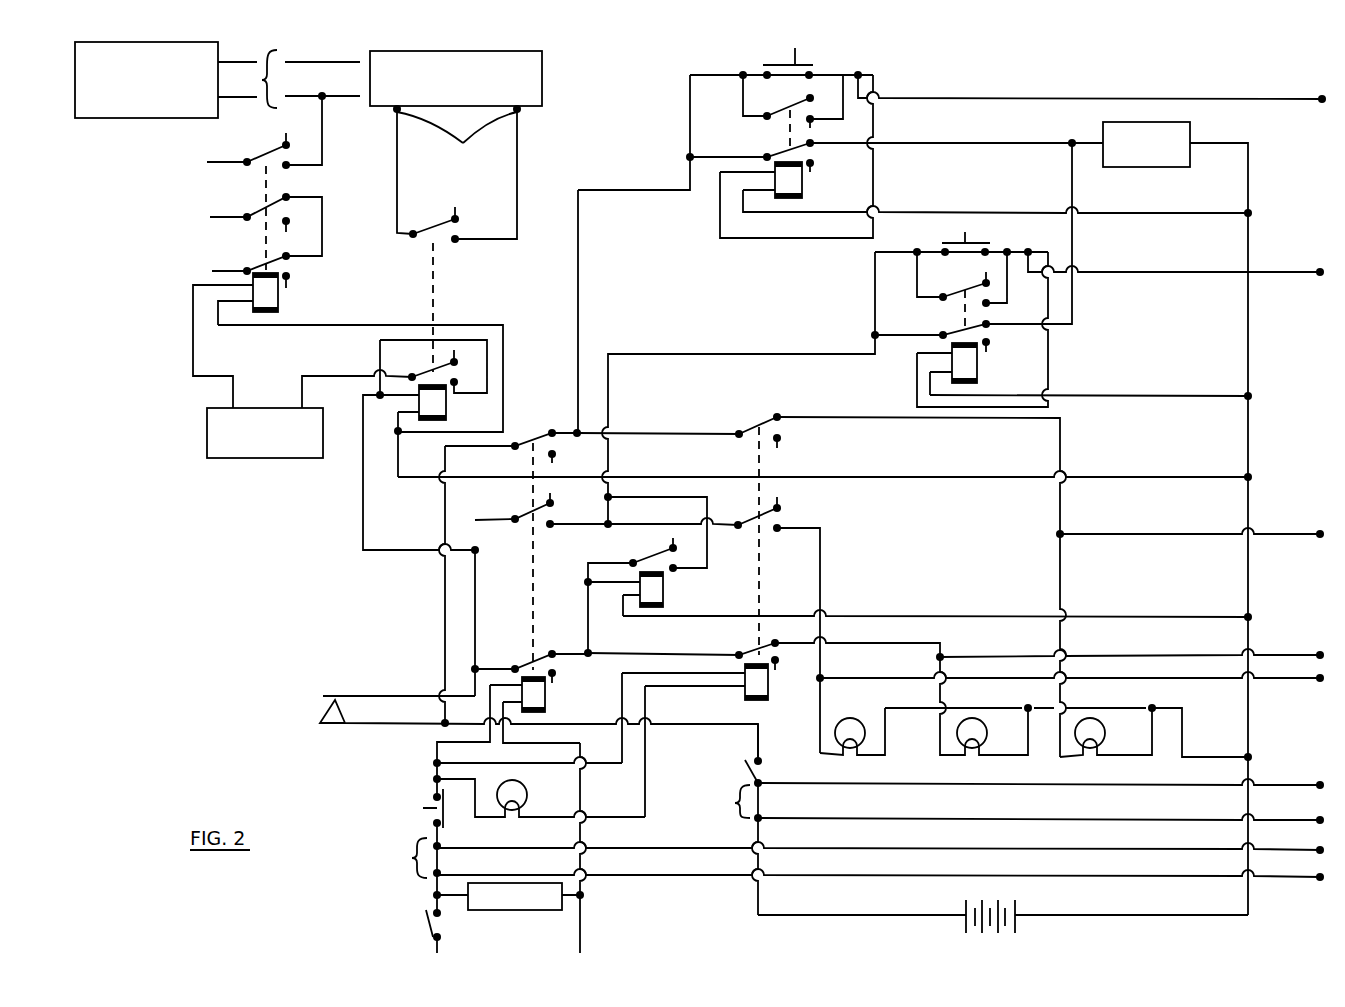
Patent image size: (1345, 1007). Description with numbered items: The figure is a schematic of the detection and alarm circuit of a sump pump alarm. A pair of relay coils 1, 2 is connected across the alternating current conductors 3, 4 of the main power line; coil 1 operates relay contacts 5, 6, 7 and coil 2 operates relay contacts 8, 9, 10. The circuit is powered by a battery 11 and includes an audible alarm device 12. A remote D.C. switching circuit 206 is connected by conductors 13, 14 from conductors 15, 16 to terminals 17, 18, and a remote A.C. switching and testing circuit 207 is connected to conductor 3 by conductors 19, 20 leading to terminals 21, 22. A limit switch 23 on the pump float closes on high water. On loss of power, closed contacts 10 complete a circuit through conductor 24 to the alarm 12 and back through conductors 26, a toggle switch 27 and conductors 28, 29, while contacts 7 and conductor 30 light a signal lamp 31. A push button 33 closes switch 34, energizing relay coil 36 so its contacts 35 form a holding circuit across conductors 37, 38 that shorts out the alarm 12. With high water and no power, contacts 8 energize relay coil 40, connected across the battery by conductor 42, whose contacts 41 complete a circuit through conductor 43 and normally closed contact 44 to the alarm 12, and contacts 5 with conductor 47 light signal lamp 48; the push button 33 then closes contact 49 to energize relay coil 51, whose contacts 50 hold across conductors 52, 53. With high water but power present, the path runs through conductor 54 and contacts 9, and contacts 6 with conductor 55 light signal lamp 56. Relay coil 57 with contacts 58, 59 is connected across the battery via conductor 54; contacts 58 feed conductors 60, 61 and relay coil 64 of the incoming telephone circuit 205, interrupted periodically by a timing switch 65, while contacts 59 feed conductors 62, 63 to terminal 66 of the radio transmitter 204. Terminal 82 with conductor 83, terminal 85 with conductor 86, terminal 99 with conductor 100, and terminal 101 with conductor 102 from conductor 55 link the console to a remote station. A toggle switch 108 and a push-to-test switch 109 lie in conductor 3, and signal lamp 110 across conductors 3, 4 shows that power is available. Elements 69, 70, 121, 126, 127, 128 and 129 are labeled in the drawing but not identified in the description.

The relay coil 1 is at (770, 690).
The relay coil 2 is at (546, 700).
The 110 Volt conductor 3 is at (435, 885).
The 110 Volt conductor 4 is at (583, 922).
The relay contacts 5 is at (752, 650).
The relay contacts 6 is at (752, 518).
The relay contacts 7 is at (762, 425).
The relay contacts 8 is at (525, 660).
The relay contacts 9 is at (527, 513).
The relay contacts 10 is at (542, 430).
The battery 11 is at (1020, 920).
The alarm device 12 is at (1178, 167).
The conductor 13 is at (912, 785).
The conductor 14 is at (1040, 819).
The conductor 15 is at (758, 830).
The conductor 16 is at (760, 748).
The terminal 17 is at (1318, 876).
The terminal 18 is at (1318, 848).
The conductor 19 is at (1088, 849).
The conductor 20 is at (1118, 876).
The terminal 21 is at (1318, 818).
The terminal 22 is at (1318, 783).
The limit switch 23 is at (318, 712).
The conductor 24 is at (945, 143).
The conductors 26 is at (855, 917).
The toggle switch 27 is at (746, 772).
The conductor 28 is at (708, 724).
The conductor 29 is at (445, 605).
The conductor 30 is at (1066, 428).
The signal lamp 31 is at (1106, 742).
The push button 33 is at (805, 64).
The switch 34 is at (785, 150).
The relay contacts 35 is at (790, 112).
The relay coil 36 is at (802, 183).
The conductor 37 is at (723, 73).
The conductor 38 is at (1103, 212).
The relay coil 40 is at (663, 595).
The relay contacts 41 is at (650, 560).
The conductor 42 is at (783, 615).
The conductor 43 is at (815, 352).
The relay contact 44 is at (960, 330).
The conductor 47 is at (858, 645).
The signal lamp 48 is at (982, 740).
The switch contact 49 is at (975, 243).
The relay contacts 50 is at (965, 290).
The relay coil 51 is at (977, 364).
The conductor 52 is at (893, 252).
The conductor 53 is at (1178, 395).
The conductor 54 is at (400, 696).
The conductor 55 is at (822, 545).
The signal lamp 56 is at (850, 718).
The relay coil 57 is at (446, 412).
The relay contacts 58 is at (428, 373).
The relay contacts 59 is at (440, 227).
The conductor 60 is at (193, 308).
The conductor 61 is at (370, 323).
The conductor 62 is at (397, 177).
The conductor 63 is at (517, 160).
The relay coil 64 is at (280, 300).
The timing switch 65 is at (207, 433).
The terminal 66 is at (457, 143).
The terminal 69 is at (1252, 757).
The terminal 70 is at (1318, 530).
The terminal 82 is at (1320, 95).
The conductor 83 is at (1128, 97).
The terminal 85 is at (1318, 652).
The conductor 86 is at (1135, 655).
The terminal 99 is at (1320, 270).
The conductor 100 is at (1172, 271).
The terminal 101 is at (1318, 681).
The conductor 102 is at (1172, 680).
The toggle switch 108 is at (426, 922).
The push-to-test button switch 109 is at (423, 808).
The signal lamp 110 is at (528, 792).
The telephone line 121 is at (300, 60).
The telephone line 126 is at (300, 95).
The relay switches 127 is at (262, 266).
The relay switch 128 is at (262, 153).
The conductor 129 is at (225, 162).
The radio transmitter 204 is at (542, 78).
The incoming telephone circuit 205 is at (260, 98).
The remote D.C. switching circuit 206 is at (733, 802).
The remote A.C. switching and testing circuit 207 is at (410, 858).